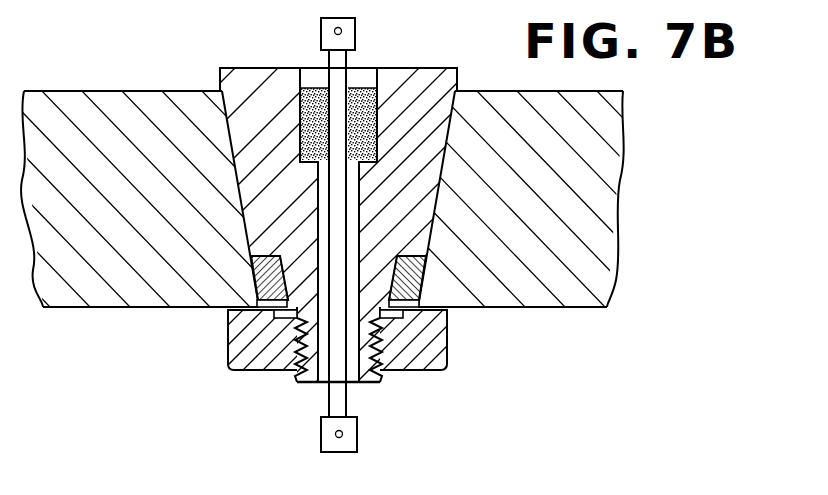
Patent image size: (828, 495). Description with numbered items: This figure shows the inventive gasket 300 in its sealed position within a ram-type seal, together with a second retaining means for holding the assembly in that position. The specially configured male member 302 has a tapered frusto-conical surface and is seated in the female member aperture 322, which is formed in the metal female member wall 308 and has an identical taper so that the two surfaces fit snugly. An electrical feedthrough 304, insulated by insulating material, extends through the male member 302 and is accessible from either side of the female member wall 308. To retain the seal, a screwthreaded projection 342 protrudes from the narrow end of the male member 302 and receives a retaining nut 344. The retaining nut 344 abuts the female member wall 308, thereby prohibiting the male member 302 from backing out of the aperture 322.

The gasket 300 is at (257, 278).
The male member 302 is at (262, 68).
The electrical feedthrough 304 is at (352, 15).
The female member wall 308 is at (103, 300).
The female member aperture 322 is at (392, 312).
The screwthreaded projection 342 is at (380, 378).
The retaining nut 344 is at (272, 362).